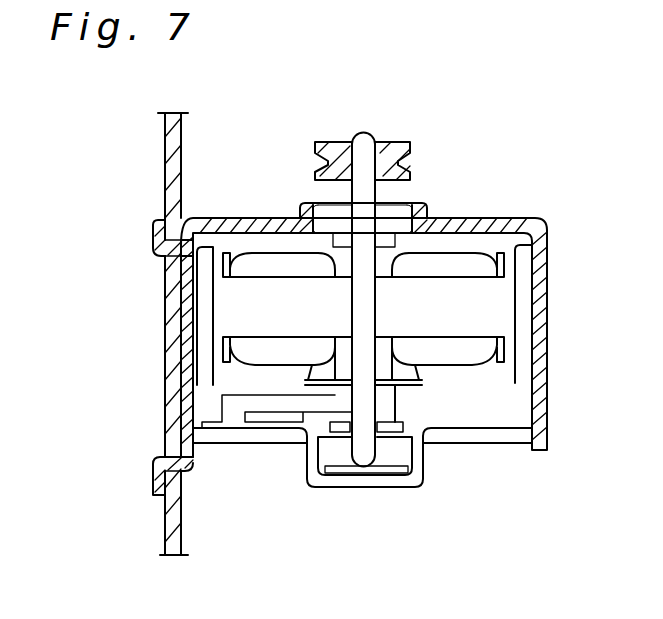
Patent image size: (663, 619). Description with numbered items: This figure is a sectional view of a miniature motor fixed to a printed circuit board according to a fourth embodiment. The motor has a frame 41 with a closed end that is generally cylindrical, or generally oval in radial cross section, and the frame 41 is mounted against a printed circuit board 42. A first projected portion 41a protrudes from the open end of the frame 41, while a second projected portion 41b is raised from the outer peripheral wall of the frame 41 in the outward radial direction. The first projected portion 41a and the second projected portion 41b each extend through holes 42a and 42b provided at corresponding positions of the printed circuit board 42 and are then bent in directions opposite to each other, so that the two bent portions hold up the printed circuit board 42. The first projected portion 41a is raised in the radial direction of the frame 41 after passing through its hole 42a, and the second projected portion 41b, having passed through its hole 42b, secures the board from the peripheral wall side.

The frame 41 is at (256, 218).
The first projected portion 41a is at (153, 477).
The second projected portion 41b is at (153, 232).
The printed circuit board 42 is at (165, 163).
The hole 42a is at (172, 471).
The hole 42b is at (168, 262).